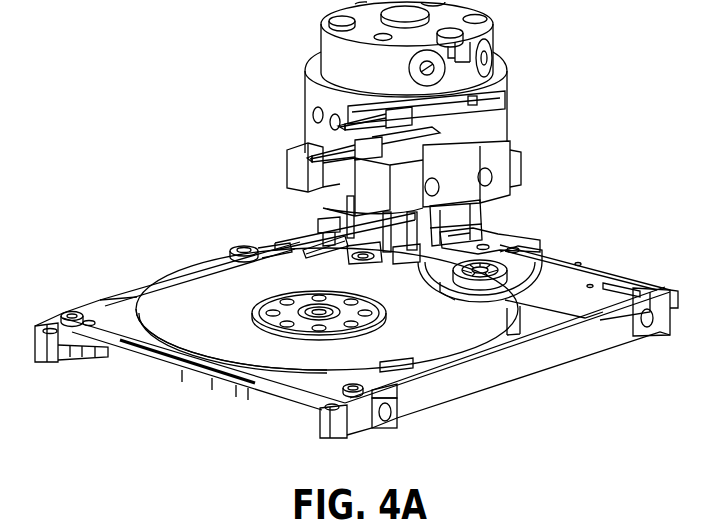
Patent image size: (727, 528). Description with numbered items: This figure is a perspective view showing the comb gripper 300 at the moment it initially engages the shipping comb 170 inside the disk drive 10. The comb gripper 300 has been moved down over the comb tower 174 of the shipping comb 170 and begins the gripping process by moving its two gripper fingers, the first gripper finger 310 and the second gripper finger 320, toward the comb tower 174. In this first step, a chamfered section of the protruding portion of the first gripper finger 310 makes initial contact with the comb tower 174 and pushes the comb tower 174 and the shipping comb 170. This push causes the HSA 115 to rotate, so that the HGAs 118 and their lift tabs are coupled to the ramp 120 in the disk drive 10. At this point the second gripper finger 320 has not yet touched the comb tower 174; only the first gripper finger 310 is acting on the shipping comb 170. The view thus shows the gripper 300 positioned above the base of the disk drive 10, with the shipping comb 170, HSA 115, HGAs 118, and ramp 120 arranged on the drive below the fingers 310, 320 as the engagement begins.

The disk drive 10 is at (530, 400).
The HSA 115 is at (470, 238).
The HGAs 118 is at (320, 226).
The ramp 120 is at (257, 243).
The shipping comb 170 is at (488, 268).
The comb tower 174 is at (500, 182).
The comb gripper 300 is at (547, 141).
The first gripper finger 310 is at (490, 217).
The second gripper finger 320 is at (325, 247).